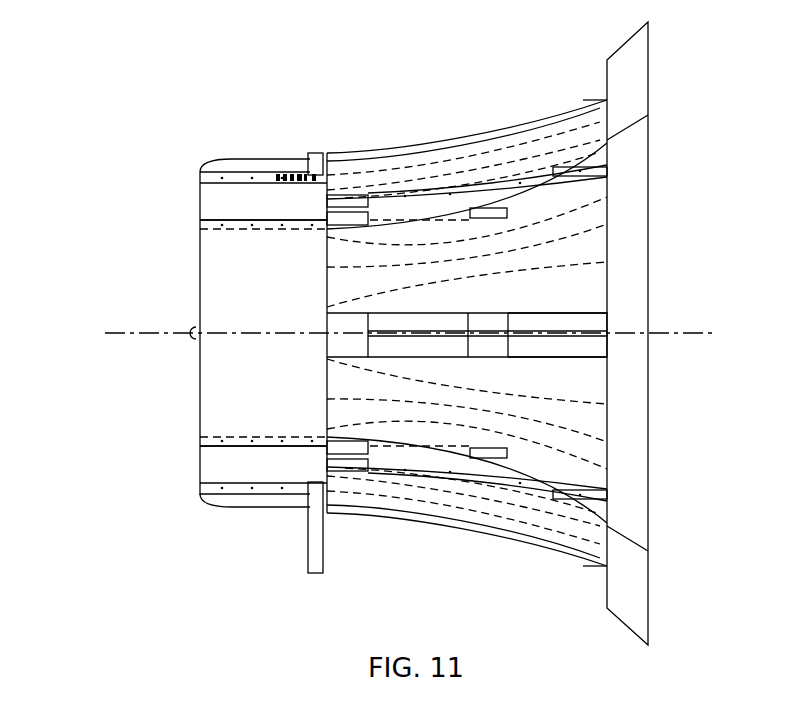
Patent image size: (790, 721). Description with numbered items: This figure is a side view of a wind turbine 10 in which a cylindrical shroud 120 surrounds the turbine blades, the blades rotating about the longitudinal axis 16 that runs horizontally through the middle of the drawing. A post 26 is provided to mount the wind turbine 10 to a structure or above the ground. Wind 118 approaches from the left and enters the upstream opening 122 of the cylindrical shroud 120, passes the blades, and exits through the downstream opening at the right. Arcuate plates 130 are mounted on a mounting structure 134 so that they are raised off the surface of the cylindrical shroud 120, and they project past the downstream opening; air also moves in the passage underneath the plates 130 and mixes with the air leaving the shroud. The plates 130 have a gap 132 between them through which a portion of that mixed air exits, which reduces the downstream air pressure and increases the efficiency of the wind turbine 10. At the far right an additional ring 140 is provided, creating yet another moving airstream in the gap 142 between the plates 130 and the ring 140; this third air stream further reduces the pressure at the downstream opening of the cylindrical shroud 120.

The wind turbine 10 is at (308, 113).
The longitudinal axis 16 is at (165, 335).
The post 26 is at (315, 551).
The wind 118 is at (140, 224).
The cylindrical shroud 120 is at (247, 280).
The upstream opening 122 is at (188, 452).
The plates 130 is at (467, 333).
The gap 132 is at (552, 345).
The mounting structure 134 is at (483, 345).
The ring 140 is at (627, 70).
The gap 142 is at (583, 100).